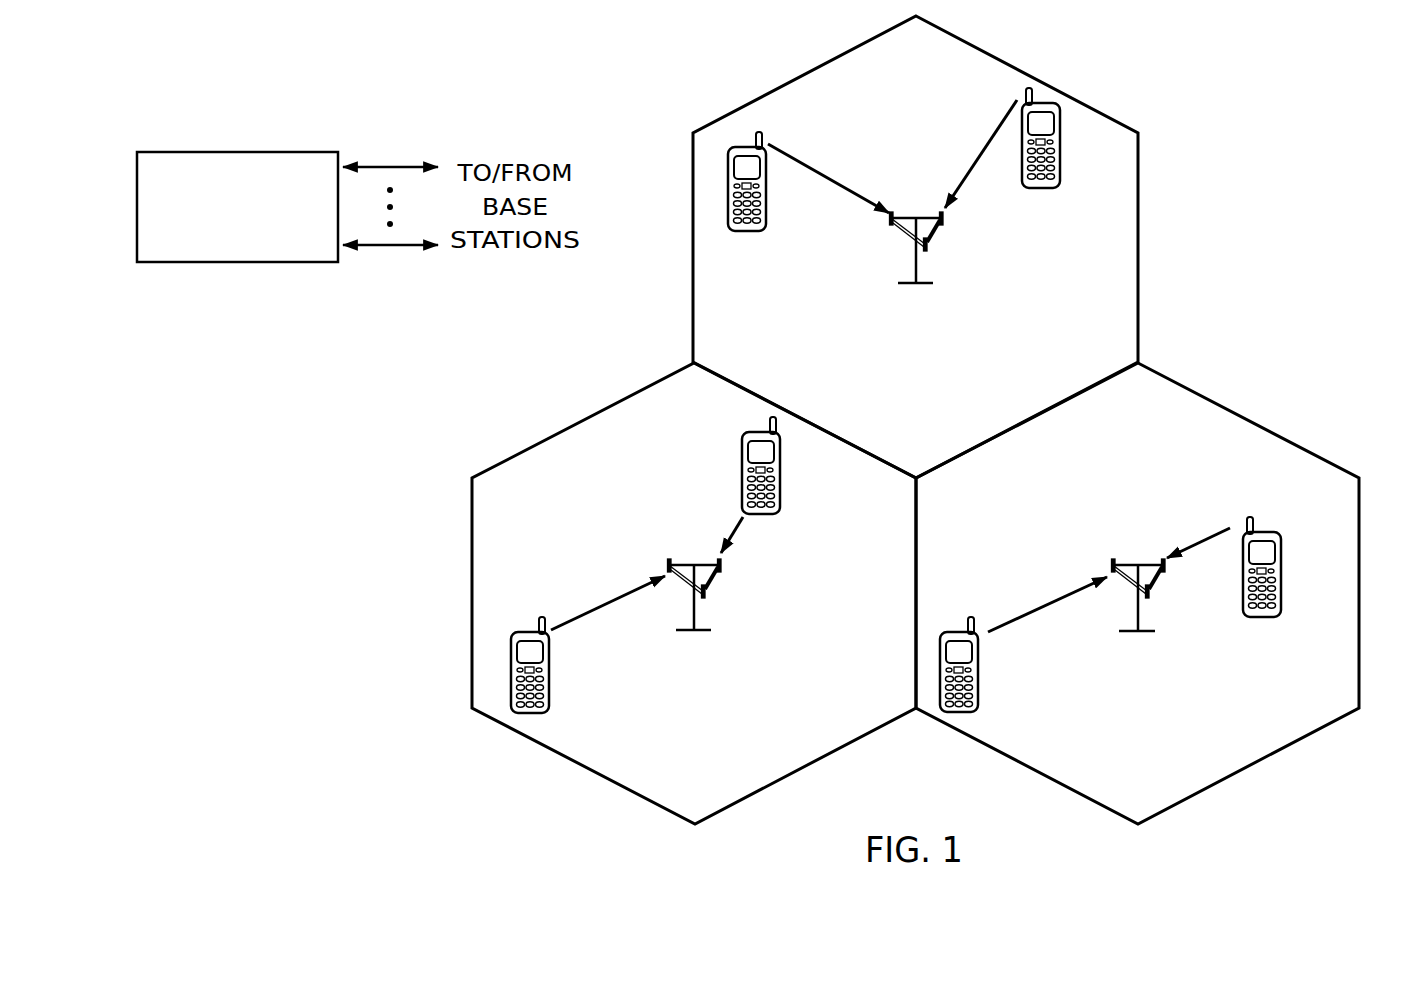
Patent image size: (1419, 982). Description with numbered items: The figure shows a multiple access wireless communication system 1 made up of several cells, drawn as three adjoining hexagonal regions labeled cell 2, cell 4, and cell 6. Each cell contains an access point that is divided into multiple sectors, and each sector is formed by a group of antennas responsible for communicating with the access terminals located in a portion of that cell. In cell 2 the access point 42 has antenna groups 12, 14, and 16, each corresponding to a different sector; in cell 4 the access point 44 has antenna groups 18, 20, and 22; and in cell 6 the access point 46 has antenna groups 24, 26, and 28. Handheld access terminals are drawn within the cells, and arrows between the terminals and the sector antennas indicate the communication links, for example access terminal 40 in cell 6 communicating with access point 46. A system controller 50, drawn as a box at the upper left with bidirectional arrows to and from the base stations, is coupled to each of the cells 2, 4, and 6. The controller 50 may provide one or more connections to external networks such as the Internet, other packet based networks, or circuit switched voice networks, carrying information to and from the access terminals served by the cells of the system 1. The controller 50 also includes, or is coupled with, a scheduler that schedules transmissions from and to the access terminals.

The multiple access wireless communication system 1 is at (1273, 115).
The cell 2 is at (1262, 425).
The cell 4 is at (578, 422).
The cell 6 is at (950, 33).
The antenna group 12 is at (1110, 567).
The antenna group 14 is at (1153, 594).
The antenna group 16 is at (1168, 568).
The antenna group 18 is at (710, 594).
The antenna group 20 is at (724, 568).
The antenna group 22 is at (666, 567).
The antenna group 24 is at (888, 222).
The antenna group 26 is at (930, 250).
The antenna group 28 is at (945, 222).
The access terminal 40 is at (1040, 188).
The access point 42 is at (1138, 560).
The access point 44 is at (695, 562).
The access point 46 is at (915, 212).
The controller 50 is at (272, 152).